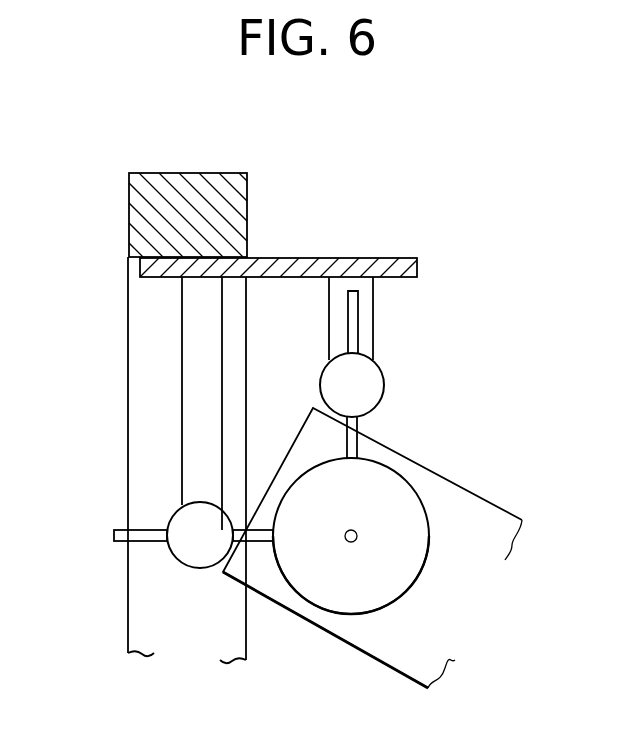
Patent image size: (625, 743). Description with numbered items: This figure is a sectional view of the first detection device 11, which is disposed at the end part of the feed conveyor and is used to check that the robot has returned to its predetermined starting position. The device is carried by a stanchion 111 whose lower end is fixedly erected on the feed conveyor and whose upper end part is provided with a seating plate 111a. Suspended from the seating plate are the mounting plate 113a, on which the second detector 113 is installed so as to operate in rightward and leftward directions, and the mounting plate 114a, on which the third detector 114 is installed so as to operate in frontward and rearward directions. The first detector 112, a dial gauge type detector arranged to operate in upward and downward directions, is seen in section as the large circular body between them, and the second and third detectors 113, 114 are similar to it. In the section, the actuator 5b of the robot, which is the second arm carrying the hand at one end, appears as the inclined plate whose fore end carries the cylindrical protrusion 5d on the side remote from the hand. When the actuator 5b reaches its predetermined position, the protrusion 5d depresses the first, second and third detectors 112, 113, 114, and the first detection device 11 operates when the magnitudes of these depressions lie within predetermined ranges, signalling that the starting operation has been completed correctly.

The first detection device 11 is at (305, 258).
The stanchion 111 is at (128, 350).
The seating plate 111a is at (390, 258).
The mounting plate 113a is at (182, 437).
The second detector 113 is at (178, 560).
The mounting plate 114a is at (374, 322).
The third detector 114 is at (385, 380).
The first detector 112 is at (357, 533).
The cylindrical protrusion 5d is at (325, 613).
The actuator 5b is at (380, 667).